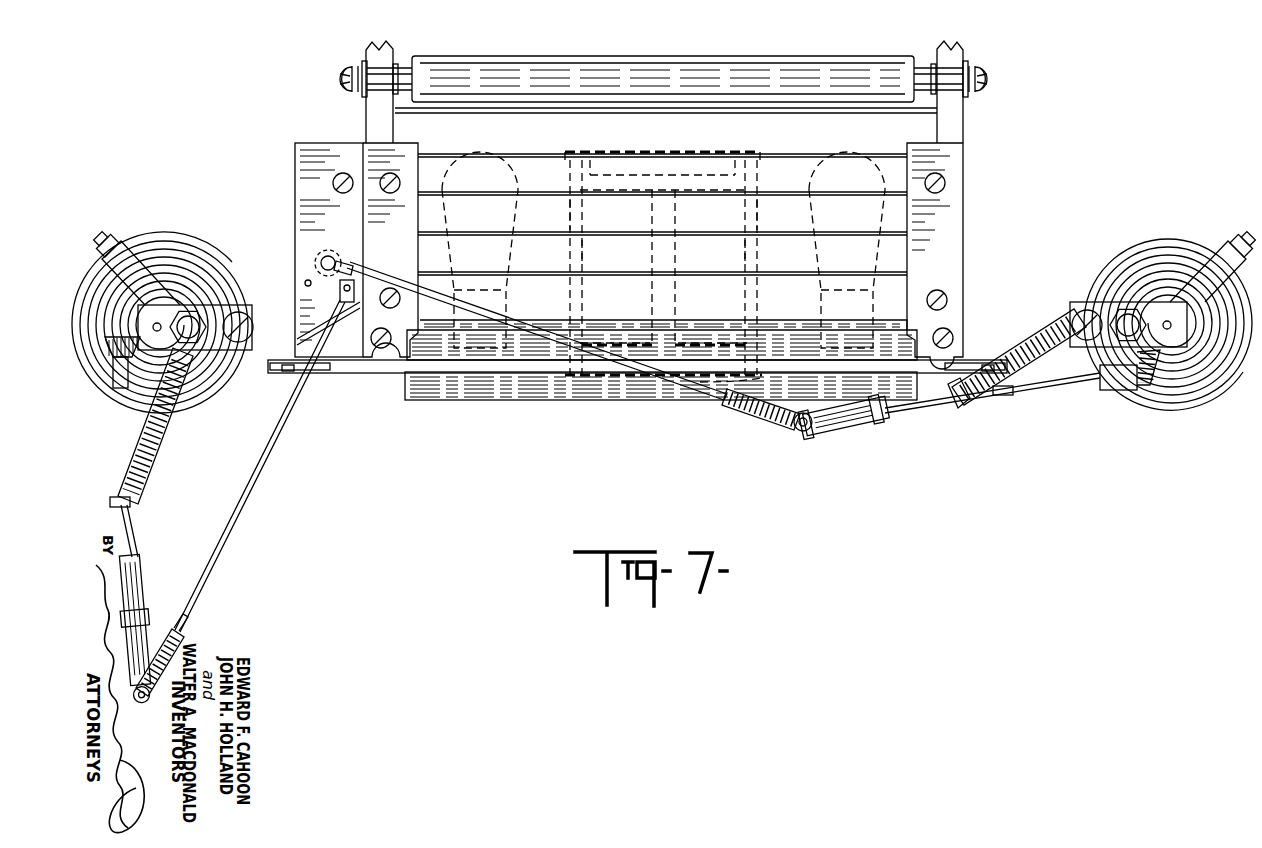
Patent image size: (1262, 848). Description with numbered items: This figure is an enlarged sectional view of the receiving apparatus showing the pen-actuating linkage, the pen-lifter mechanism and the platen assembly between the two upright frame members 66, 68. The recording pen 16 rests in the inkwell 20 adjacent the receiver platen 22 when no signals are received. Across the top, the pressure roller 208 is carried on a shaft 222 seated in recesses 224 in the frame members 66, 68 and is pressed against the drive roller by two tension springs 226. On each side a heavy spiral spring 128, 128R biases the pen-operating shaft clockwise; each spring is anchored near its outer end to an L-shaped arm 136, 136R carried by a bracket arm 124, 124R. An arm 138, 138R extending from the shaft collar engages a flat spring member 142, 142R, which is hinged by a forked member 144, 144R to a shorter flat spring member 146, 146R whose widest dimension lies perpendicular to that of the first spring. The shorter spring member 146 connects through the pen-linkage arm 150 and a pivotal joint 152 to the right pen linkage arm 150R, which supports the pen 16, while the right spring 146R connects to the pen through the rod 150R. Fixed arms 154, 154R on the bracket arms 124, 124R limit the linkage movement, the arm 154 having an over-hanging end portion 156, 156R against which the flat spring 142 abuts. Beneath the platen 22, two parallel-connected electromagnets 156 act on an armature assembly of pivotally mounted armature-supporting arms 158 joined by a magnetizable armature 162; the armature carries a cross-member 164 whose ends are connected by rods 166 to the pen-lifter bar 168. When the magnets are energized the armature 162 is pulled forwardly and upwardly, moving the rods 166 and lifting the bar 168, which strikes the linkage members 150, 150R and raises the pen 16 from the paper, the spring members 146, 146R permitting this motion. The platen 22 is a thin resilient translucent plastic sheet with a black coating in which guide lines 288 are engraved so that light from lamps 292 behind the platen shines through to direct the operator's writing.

The recording pen 16 is at (338, 258).
The inkwell 20 is at (320, 258).
The receiver platen 22 is at (583, 128).
The upright frame member 66 is at (366, 125).
The upright frame member 68 is at (952, 123).
The bracket arm 124 is at (246, 302).
The right bracket arm 124R is at (1075, 302).
The spiral spring 128 is at (192, 250).
The right spiral biasing spring 128R is at (1138, 250).
The L-shaped arm 136 is at (128, 265).
The right L-shaped arm 136R is at (1213, 275).
The arm 138 is at (113, 372).
The right arm 138R is at (1130, 392).
The flat spring member 142 is at (131, 514).
The right flat spring member 142R is at (1013, 390).
The forked member 144 is at (140, 642).
The right forked member 144R is at (865, 427).
The shorter flat spring member 146 is at (185, 638).
The right shorter flat spring member 146R is at (755, 412).
The pen-linkage arm 150 is at (264, 466).
The right pen linkage arm 150R is at (480, 313).
The pivotal joint 152 is at (363, 277).
The fixed arm 154 is at (166, 418).
The right fixed arm 154R is at (1030, 352).
The over-hanging end portion / electromagnets 156 is at (112, 503).
The right over-hanging end portion 156R is at (992, 389).
The armature-supporting arms 158 is at (570, 212).
The magnetizable armature 162 is at (752, 382).
The cross-member 164 is at (278, 362).
The rod 166 is at (282, 370).
The pen-lifter bar 168 is at (408, 366).
The pressure roller 208 is at (665, 79).
The shaft 222 is at (340, 79).
The recesses 224 is at (373, 86).
The tension springs 226 is at (346, 66).
The guide lines 288 is at (770, 155).
The lamps 292 is at (478, 143).